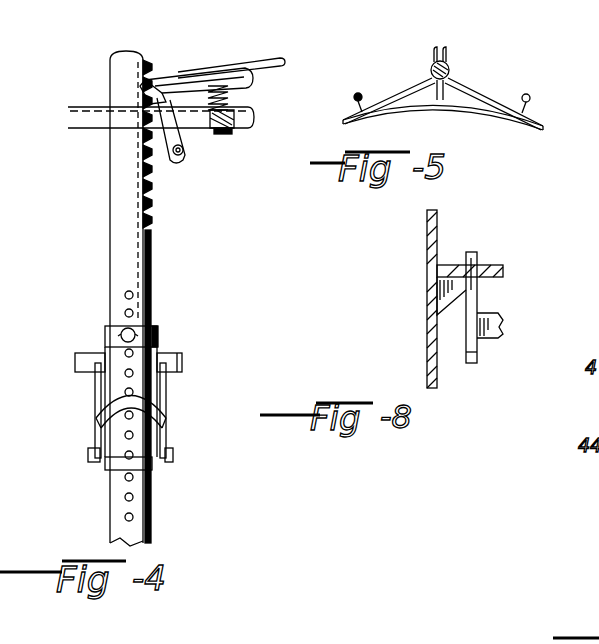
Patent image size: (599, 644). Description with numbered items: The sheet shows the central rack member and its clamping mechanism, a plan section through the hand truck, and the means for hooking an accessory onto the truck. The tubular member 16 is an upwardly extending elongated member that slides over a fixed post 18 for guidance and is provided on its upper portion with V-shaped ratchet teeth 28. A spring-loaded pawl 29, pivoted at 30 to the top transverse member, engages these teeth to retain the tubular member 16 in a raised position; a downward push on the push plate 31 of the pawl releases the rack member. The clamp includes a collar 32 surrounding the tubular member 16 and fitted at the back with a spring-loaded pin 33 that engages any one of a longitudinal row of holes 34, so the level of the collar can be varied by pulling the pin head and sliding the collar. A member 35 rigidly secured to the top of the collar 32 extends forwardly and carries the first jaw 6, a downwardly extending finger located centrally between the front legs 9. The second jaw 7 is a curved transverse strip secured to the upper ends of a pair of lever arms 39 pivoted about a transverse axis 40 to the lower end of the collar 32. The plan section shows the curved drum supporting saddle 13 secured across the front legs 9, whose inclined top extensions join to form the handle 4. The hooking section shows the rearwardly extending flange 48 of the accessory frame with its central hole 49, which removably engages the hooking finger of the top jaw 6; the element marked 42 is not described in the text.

In FIG. 8, the handle 4 is at (427, 332).
In FIG. 8, the first jaw 6 is at (478, 353).
In FIG. 4, the second jaw 7 is at (180, 362).
In FIG. 8, the second jaw 7 is at (480, 300).
In FIG. 5, the front legs 9 is at (356, 95).
In FIG. 5, the drum supporting saddle 13 is at (417, 104).
In FIG. 4, the tubular member 16 is at (140, 260).
In FIG. 5, the tubular member 16 is at (460, 80).
In FIG. 5, the post 18 is at (450, 72).
In FIG. 4, the ratchet teeth 28 is at (150, 176).
In FIG. 4, the pawl 29 is at (165, 82).
In FIG. 4, the pivot 30 is at (187, 161).
In FIG. 4, the push plate 31 is at (279, 55).
In FIG. 4, the collar 32 is at (158, 335).
In FIG. 4, the spring-loaded pin 33 is at (147, 325).
In FIG. 4, the holes 34 is at (133, 498).
In FIG. 8, the member 35 is at (503, 327).
In FIG. 4, the lever arms 39 is at (167, 390).
In FIG. 4, the transverse axis 40 is at (88, 460).
In FIG. 4, the strap 42 is at (146, 406).
In FIG. 8, the rearwardly extending flange 48 is at (503, 267).
In FIG. 8, the central hole 49 is at (475, 252).